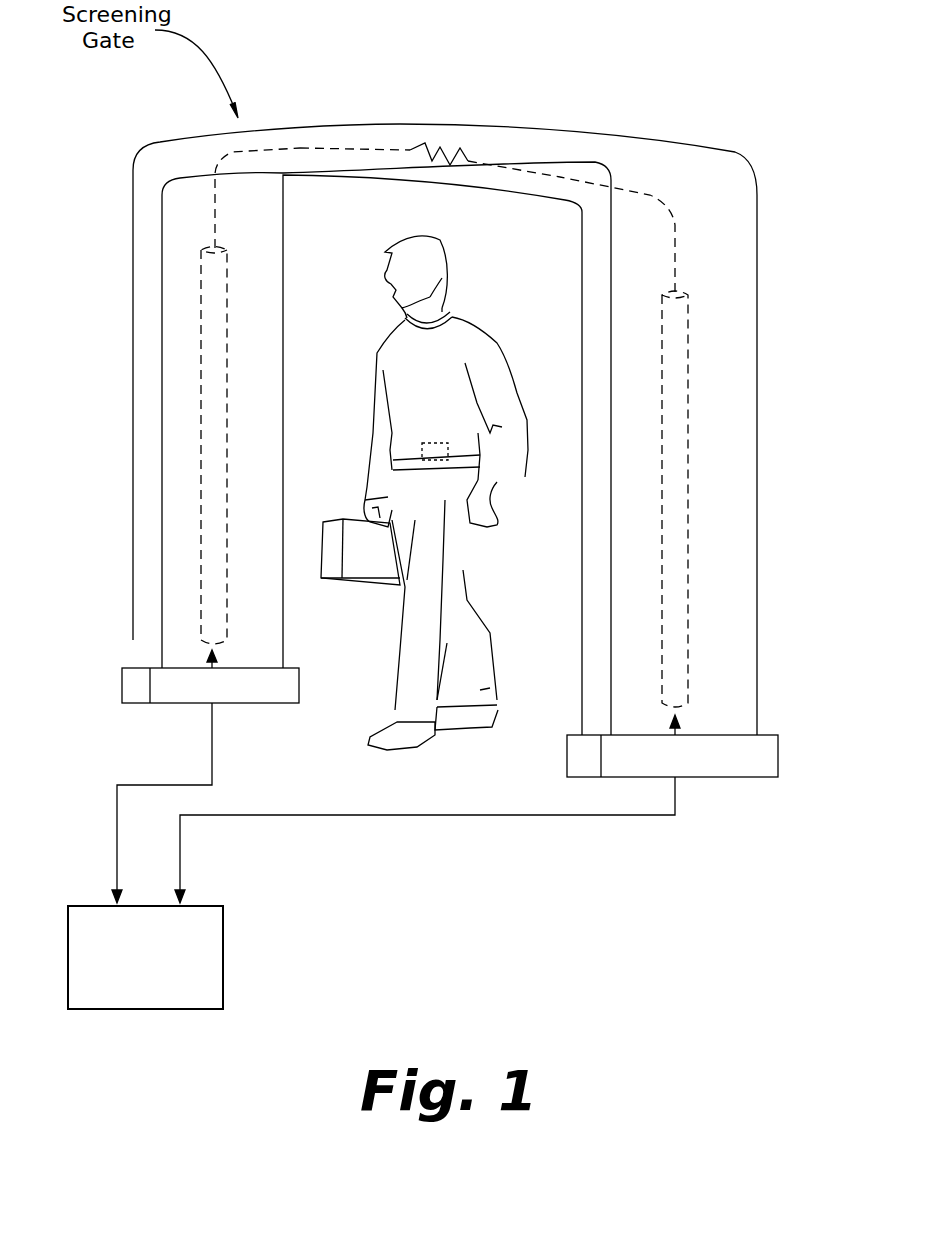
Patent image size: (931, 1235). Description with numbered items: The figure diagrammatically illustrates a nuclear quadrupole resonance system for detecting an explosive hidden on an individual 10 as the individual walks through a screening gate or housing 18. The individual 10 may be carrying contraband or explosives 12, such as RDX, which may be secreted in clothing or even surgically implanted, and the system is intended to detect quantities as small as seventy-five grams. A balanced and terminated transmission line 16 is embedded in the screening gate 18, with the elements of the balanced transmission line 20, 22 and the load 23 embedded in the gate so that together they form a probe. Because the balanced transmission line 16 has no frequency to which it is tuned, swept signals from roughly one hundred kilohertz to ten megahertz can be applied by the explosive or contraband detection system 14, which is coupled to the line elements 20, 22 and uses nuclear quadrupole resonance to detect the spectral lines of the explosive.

The individual 10 is at (397, 350).
The contraband or explosives 12 is at (440, 462).
The explosive or contraband detection system 14 is at (370, 856).
The balanced and terminated transmission line 16 is at (136, 140).
The screening gate or housing 18 is at (148, 466).
The element of the balanced transmission line 20 is at (227, 463).
The right sensor rod 22 is at (680, 468).
The load 23 is at (440, 140).